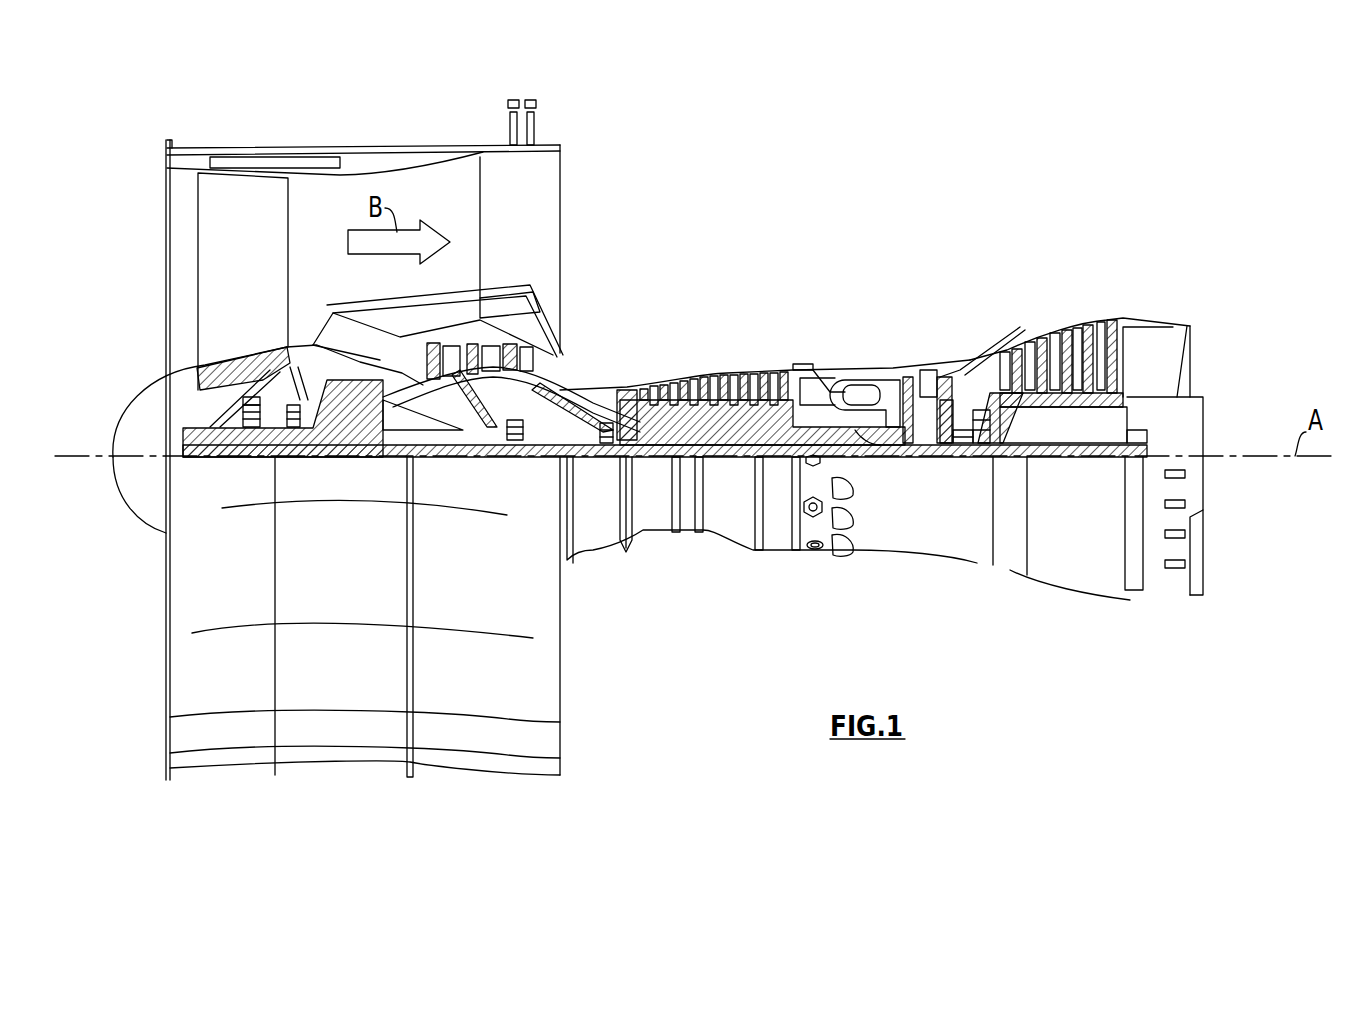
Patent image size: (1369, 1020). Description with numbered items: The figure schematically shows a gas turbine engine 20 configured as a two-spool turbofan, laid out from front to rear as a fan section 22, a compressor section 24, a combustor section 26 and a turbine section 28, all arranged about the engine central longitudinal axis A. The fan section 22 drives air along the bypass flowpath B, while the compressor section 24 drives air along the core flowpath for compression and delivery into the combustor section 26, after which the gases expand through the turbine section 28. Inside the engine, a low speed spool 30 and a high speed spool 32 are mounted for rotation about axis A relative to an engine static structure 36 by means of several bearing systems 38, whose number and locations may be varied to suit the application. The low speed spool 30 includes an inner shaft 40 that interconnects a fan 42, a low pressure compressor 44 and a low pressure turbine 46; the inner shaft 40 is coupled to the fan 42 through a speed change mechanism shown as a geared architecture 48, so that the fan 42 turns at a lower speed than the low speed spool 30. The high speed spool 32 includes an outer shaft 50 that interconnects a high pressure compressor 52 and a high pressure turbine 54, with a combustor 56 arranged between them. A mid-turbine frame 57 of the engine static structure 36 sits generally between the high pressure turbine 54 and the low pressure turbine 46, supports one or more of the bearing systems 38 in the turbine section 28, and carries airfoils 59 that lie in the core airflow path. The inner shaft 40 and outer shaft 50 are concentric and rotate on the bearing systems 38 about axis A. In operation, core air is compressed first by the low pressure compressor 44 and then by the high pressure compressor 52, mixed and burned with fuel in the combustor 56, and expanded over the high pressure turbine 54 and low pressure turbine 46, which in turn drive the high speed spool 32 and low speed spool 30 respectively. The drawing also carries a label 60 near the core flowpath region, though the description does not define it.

The gas turbine engine 20 is at (877, 195).
The fan section 22 is at (290, 143).
The compressor section 24 is at (628, 350).
The combustor section 26 is at (857, 343).
The turbine section 28 is at (1018, 303).
The low speed spool 30 is at (733, 465).
The high speed spool 32 is at (773, 420).
The engine static structure 36 is at (775, 550).
The bearing systems 38 is at (518, 437).
The inner shaft 40 is at (583, 537).
The fan 42 is at (256, 287).
The low pressure compressor 44 is at (490, 348).
The low pressure turbine 46 is at (1068, 337).
The geared architecture 48 is at (373, 437).
The outer shaft 50 is at (857, 437).
The high pressure compressor 52 is at (697, 423).
The high pressure turbine 54 is at (932, 372).
The combustor 56 is at (857, 390).
The mid-turbine frame 57 is at (973, 360).
The airfoils 59 is at (973, 390).
The core airflow path 60 is at (585, 360).